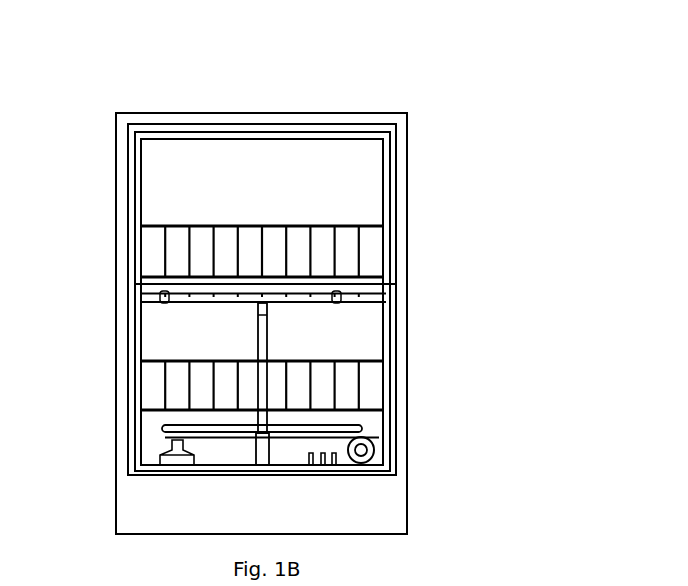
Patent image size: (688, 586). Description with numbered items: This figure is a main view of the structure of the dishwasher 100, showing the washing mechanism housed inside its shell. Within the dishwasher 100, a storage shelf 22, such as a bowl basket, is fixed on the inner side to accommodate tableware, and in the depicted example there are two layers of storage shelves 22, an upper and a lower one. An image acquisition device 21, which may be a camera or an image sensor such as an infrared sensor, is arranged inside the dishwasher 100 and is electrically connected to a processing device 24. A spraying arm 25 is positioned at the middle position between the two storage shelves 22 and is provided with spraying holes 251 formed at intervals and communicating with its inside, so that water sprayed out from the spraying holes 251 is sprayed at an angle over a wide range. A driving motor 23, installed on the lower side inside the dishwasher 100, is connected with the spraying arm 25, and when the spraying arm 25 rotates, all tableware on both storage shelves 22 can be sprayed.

The dishwasher 100 is at (245, 58).
The image acquisition device 21 is at (258, 132).
The storage shelf 22 is at (383, 224).
The spraying arm 25 is at (136, 290).
The spraying holes 251 is at (388, 296).
The driving motor 23 is at (368, 445).
The processing device 24 is at (207, 515).